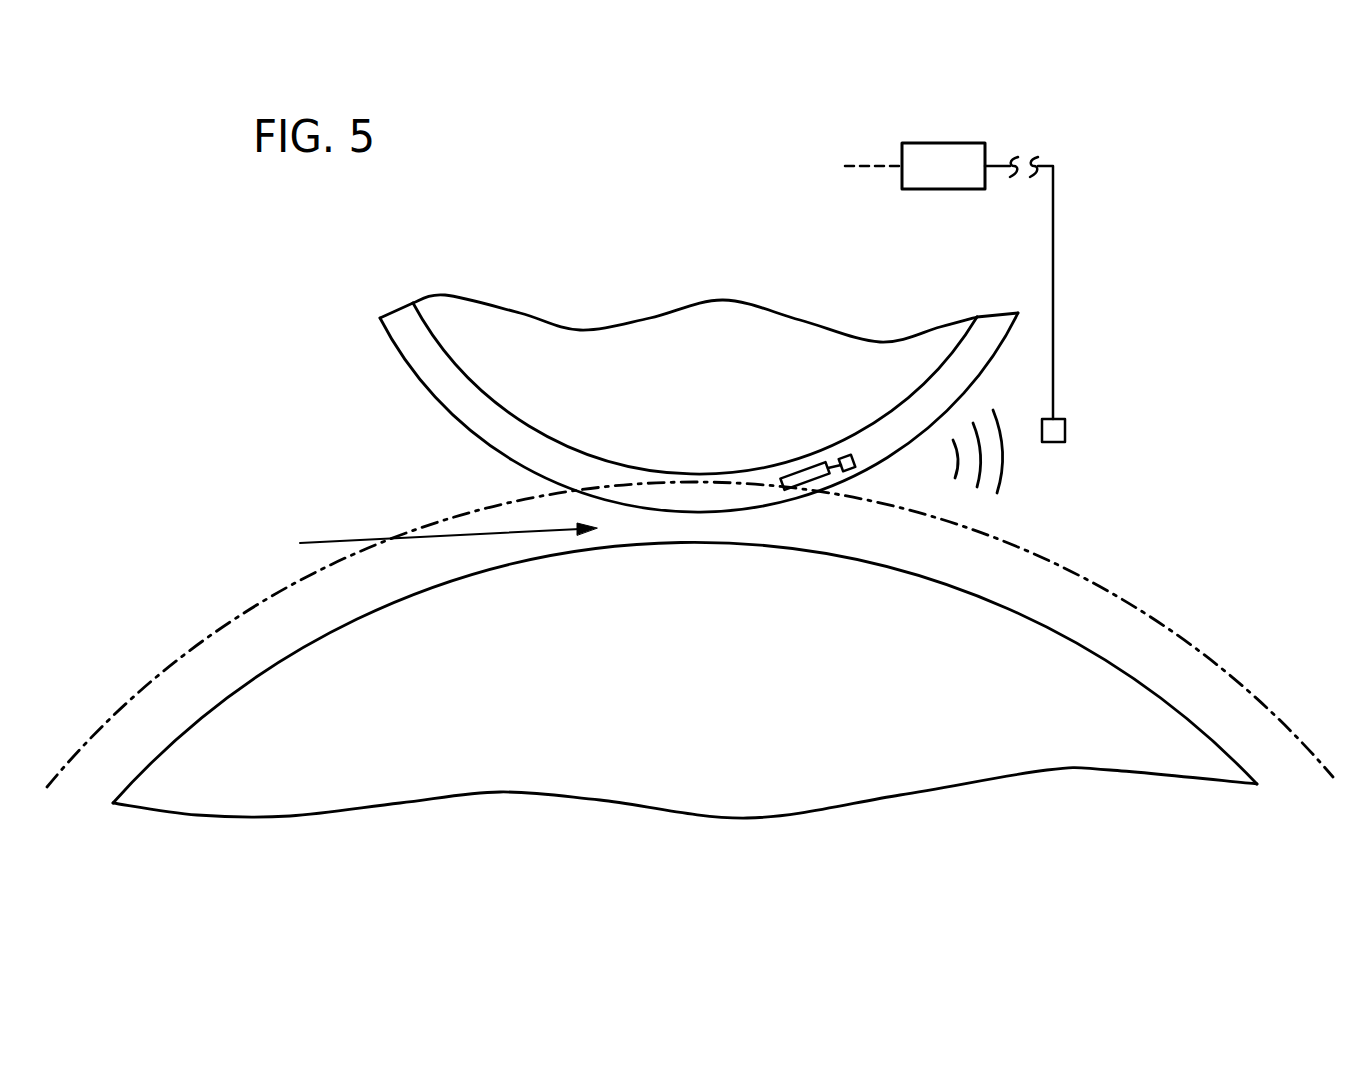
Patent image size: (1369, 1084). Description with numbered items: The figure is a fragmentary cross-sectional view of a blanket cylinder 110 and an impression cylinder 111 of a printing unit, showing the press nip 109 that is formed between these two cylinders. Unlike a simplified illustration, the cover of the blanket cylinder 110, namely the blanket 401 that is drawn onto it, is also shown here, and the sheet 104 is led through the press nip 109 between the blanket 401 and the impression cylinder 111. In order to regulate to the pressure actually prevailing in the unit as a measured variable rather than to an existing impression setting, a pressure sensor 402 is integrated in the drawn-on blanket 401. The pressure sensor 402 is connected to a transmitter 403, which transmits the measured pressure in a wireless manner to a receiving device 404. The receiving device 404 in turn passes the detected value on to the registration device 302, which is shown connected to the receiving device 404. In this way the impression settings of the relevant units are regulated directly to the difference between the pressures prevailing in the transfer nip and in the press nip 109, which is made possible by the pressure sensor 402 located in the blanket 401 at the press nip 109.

The sheet 104 is at (178, 662).
The press nip 109 is at (416, 542).
The blanket cylinder 110 is at (633, 350).
The impression cylinder 111 is at (537, 770).
The registration device 302 is at (947, 168).
The blanket 401 is at (505, 433).
The pressure sensor 402 is at (797, 476).
The transmitter 403 is at (853, 470).
The receiving device 404 is at (1065, 425).